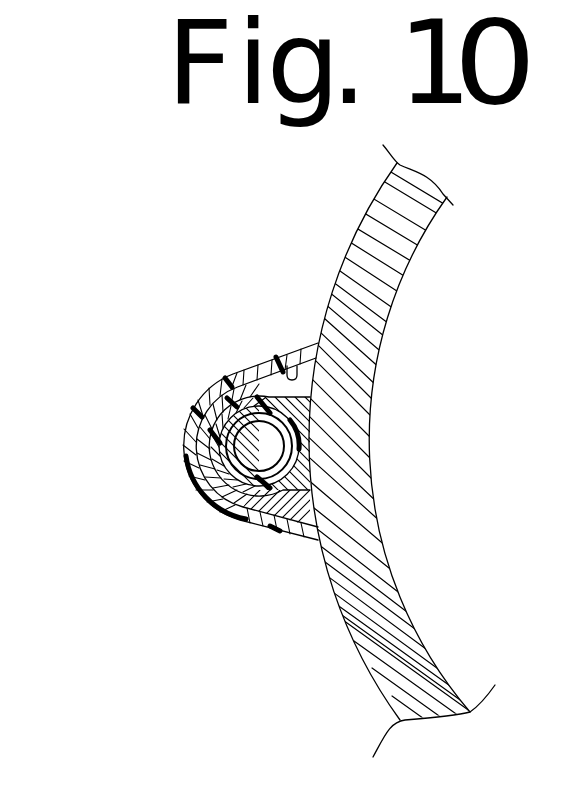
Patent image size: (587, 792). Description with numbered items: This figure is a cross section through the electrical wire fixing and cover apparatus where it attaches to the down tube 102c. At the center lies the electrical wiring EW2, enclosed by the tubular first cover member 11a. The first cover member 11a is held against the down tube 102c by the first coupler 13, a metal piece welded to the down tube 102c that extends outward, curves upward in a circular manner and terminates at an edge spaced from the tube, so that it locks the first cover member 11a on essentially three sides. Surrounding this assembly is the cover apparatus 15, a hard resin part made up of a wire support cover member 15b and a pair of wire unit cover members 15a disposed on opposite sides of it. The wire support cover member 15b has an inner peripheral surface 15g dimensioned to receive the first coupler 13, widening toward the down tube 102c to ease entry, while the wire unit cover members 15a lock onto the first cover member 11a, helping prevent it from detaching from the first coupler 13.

The down tube 102c is at (395, 587).
The cover apparatus 15 is at (262, 366).
The wire unit cover member 15a is at (224, 380).
The wire support cover member 15b is at (194, 403).
The inner peripheral surface 15g is at (280, 363).
The first coupler 13 is at (247, 520).
The first cover member 11a is at (185, 430).
The electrical wiring EW2 is at (252, 450).